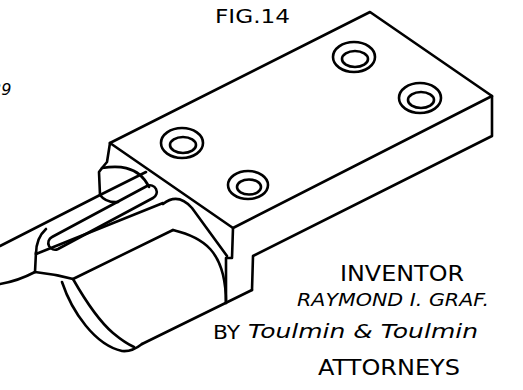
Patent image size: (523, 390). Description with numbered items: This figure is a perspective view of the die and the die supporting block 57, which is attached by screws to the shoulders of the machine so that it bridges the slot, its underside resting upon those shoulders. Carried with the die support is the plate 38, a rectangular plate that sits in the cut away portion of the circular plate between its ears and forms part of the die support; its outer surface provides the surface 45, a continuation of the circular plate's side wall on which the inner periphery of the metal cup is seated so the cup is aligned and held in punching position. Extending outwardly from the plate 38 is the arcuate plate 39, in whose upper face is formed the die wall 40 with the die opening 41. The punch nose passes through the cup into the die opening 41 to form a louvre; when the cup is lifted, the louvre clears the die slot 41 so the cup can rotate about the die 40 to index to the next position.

The die supporting block 57 is at (228, 100).
The surface 45 is at (130, 165).
The die opening 41 is at (104, 221).
The plate 38 is at (198, 228).
The die wall 40 is at (108, 250).
The arcuate plate 39 is at (125, 325).